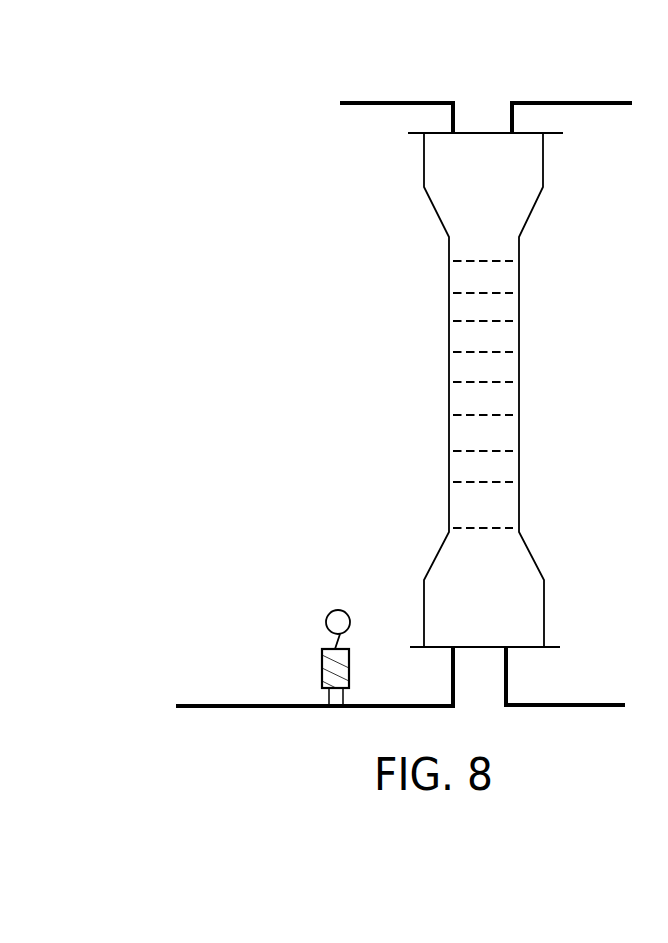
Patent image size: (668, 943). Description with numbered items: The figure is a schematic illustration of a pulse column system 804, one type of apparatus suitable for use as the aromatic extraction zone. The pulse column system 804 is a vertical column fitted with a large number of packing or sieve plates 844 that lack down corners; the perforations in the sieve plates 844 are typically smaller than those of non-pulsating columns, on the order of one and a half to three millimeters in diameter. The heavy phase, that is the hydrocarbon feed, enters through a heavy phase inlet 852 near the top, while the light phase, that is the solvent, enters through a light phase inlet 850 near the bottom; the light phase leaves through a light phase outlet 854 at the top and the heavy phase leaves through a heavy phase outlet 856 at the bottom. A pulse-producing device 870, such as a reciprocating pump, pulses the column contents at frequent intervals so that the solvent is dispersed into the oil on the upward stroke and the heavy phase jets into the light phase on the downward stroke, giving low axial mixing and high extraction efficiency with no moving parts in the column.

The pulse column system 804 is at (195, 92).
The sieve plates 844 is at (467, 288).
The heavy phase inlet 852 is at (370, 107).
The light phase outlet 854 is at (572, 105).
The light phase inlet 850 is at (309, 676).
The heavy phase outlet 856 is at (575, 687).
The pulse-producing device 870 is at (316, 629).